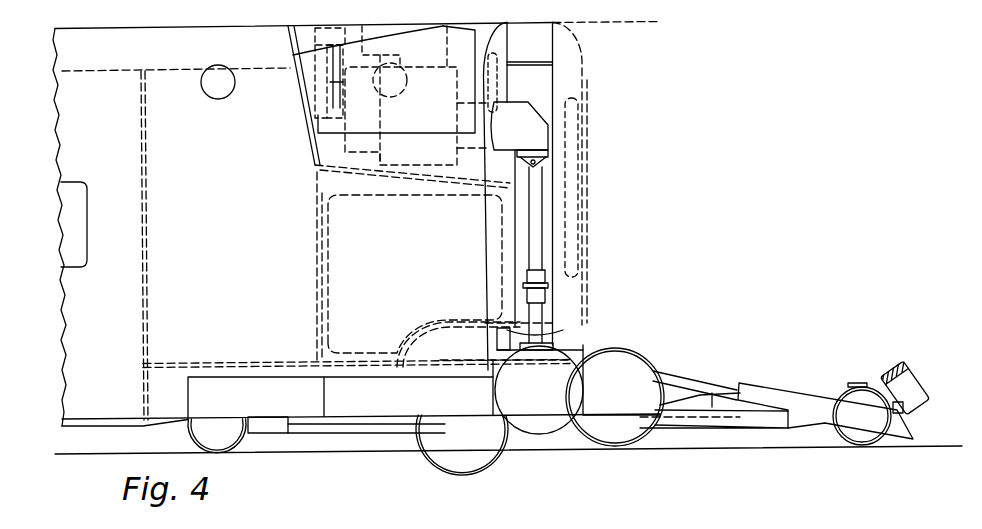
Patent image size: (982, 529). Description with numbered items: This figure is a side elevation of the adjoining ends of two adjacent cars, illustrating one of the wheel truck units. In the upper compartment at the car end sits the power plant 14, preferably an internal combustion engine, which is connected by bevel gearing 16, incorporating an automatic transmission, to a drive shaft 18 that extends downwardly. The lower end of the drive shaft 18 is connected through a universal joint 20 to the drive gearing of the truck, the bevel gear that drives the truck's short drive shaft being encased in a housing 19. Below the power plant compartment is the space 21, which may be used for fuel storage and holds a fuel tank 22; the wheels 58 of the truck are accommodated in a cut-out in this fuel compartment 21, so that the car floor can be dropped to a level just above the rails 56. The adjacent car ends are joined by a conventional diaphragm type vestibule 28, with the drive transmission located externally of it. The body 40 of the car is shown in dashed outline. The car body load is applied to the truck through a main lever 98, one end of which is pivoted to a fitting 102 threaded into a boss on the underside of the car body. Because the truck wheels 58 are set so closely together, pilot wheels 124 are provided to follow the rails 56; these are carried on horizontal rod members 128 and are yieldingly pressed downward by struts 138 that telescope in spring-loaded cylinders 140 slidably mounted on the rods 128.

The power plant 14 is at (393, 160).
The bevel gearing 16 is at (530, 113).
The drive shaft 18 is at (537, 212).
The housing 19 is at (548, 425).
The universal joint 20 is at (548, 283).
The space 21 is at (318, 182).
The fuel tank 22 is at (410, 198).
The diaphragm type vestibule 28 is at (545, 72).
The body panel 40 is at (275, 301).
The rails 56 is at (768, 447).
The wheels 58 is at (470, 445).
The main lever 98 is at (692, 408).
The fitting 102 is at (918, 385).
The pilot wheels 124 is at (870, 395).
The horizontal rod members 128 is at (720, 422).
The struts 138 is at (724, 388).
The cylinders 140 is at (773, 393).